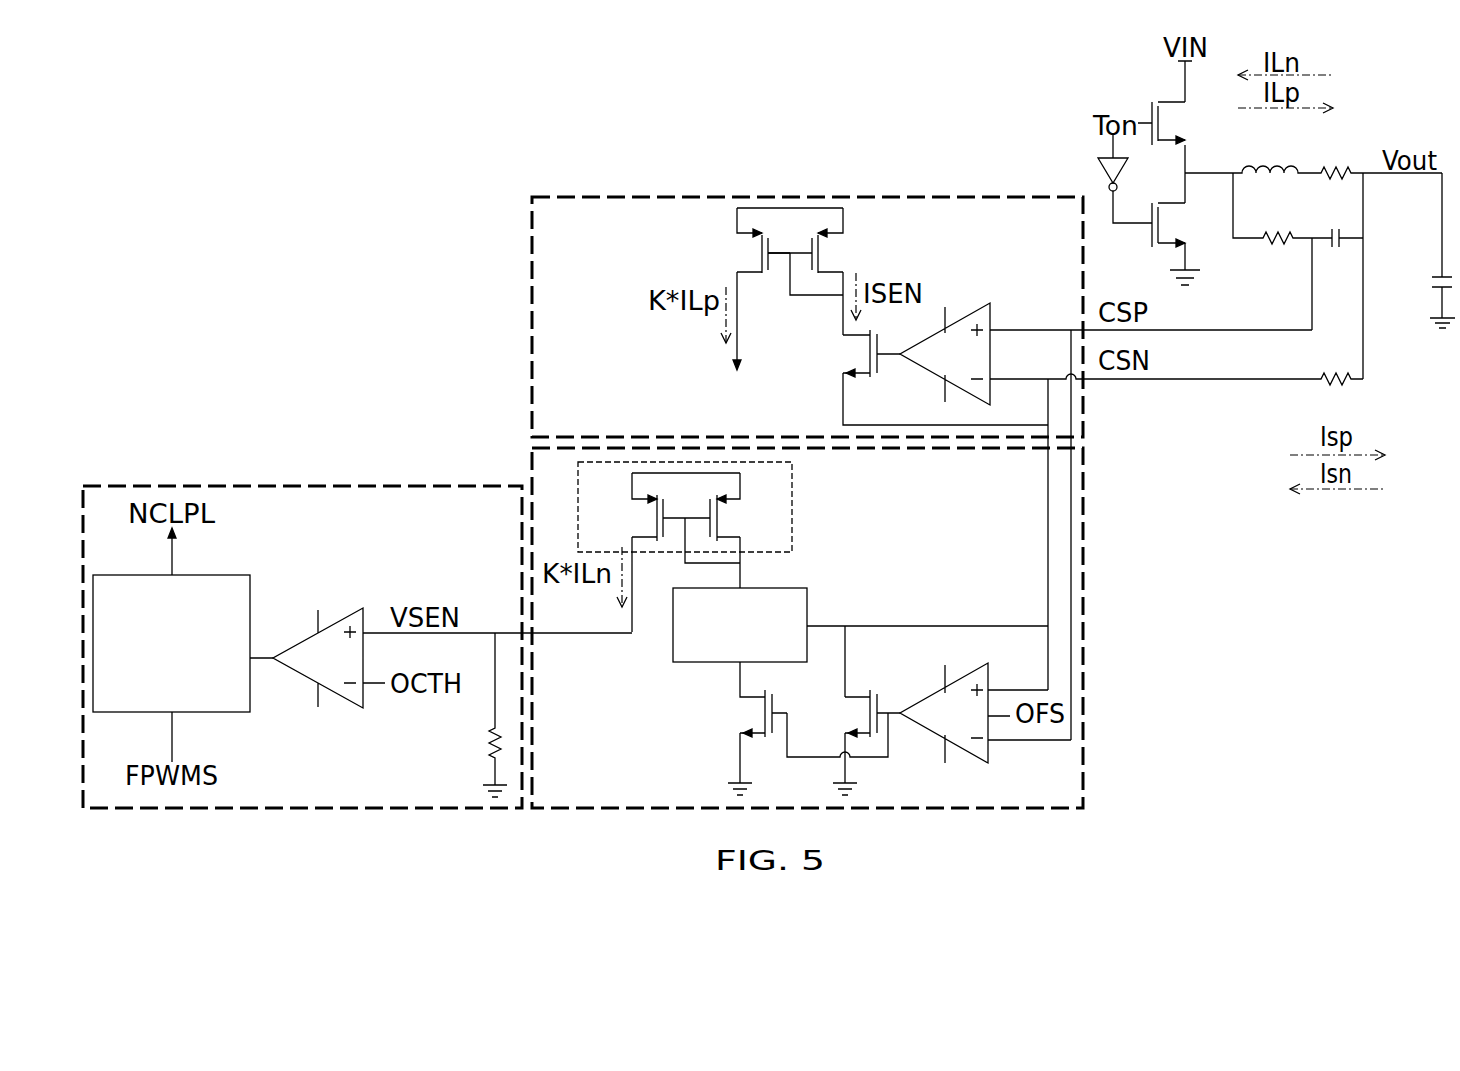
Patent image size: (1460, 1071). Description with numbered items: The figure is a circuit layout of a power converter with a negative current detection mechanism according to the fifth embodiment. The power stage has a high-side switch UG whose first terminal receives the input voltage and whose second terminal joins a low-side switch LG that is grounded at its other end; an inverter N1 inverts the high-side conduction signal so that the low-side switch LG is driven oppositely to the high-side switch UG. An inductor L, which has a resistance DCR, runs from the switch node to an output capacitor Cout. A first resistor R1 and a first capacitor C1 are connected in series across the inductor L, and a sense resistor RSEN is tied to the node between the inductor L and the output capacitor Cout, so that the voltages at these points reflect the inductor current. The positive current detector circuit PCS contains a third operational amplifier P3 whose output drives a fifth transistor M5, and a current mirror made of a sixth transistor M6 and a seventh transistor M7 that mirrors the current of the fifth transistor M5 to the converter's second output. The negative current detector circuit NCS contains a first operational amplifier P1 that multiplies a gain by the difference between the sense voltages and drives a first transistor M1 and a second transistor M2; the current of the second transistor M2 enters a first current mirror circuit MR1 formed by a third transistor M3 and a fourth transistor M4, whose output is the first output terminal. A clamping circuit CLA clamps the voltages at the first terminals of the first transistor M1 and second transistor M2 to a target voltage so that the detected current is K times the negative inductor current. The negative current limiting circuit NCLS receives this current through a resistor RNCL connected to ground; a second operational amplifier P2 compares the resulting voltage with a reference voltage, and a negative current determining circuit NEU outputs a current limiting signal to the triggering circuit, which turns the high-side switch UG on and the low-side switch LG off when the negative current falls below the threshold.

The high-side switch UG is at (1183, 123).
The low-side switch LG is at (1190, 225).
The inverter N1 is at (1111, 190).
The inductor L is at (1275, 154).
The resistance DCR is at (1335, 157).
The output capacitor Cout is at (1413, 245).
The first resistor R1 is at (1278, 222).
The first capacitor C1 is at (1336, 223).
The sense resistor RSEN is at (1339, 397).
The positive current detector circuit PCS is at (809, 195).
The seventh transistor M7 is at (742, 240).
The sixth transistor M6 is at (828, 240).
The fifth transistor M5 is at (851, 353).
The third operational amplifier P3 is at (952, 323).
The negative current detector circuit NCS is at (1084, 639).
The first current mirror circuit MR1 is at (792, 498).
The fourth transistor M4 is at (637, 507).
The third transistor M3 is at (732, 507).
The clamping circuit CLA is at (807, 607).
The second transistor M2 is at (742, 699).
The first transistor M1 is at (851, 713).
The first operational amplifier P1 is at (958, 737).
The negative current limiting circuit NCLS is at (299, 483).
The negative current determining circuit NEU is at (217, 702).
The second operational amplifier P2 is at (328, 630).
The resistor RNCL is at (453, 709).